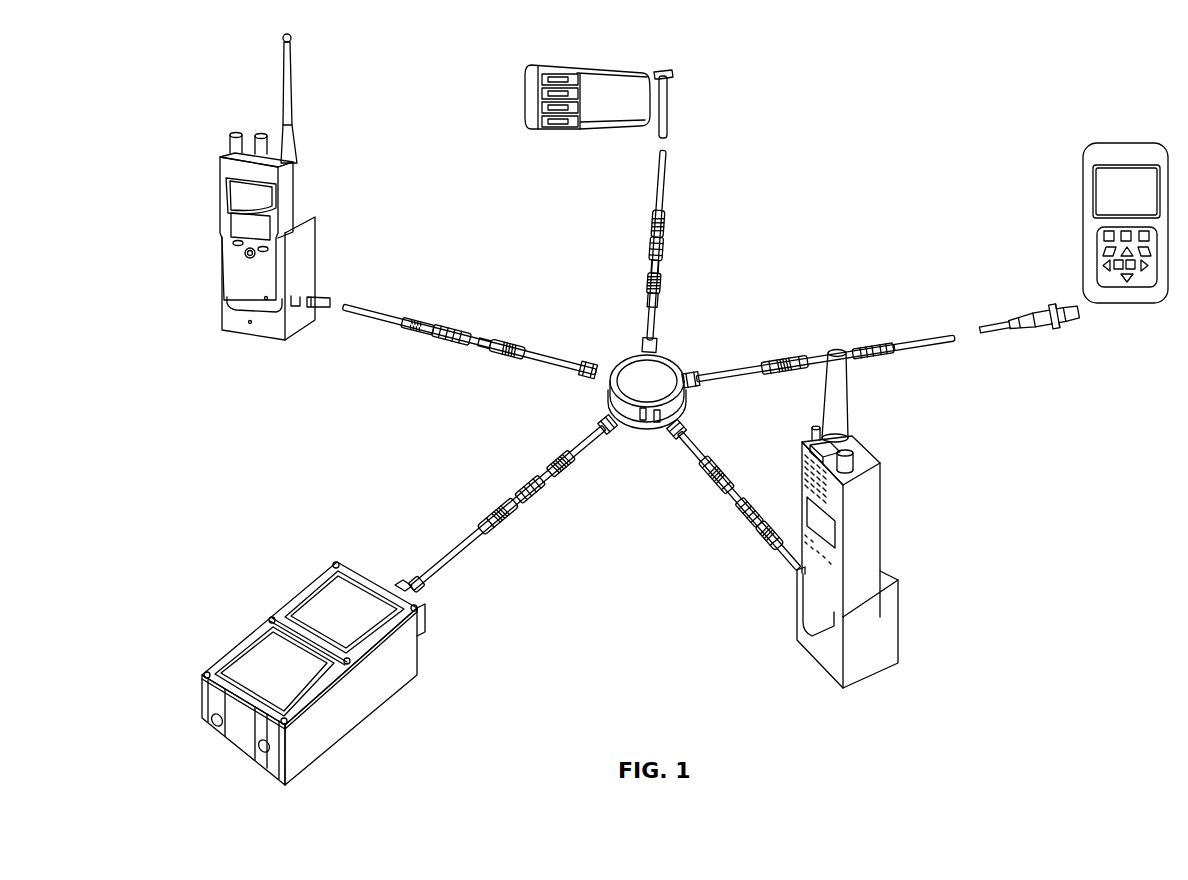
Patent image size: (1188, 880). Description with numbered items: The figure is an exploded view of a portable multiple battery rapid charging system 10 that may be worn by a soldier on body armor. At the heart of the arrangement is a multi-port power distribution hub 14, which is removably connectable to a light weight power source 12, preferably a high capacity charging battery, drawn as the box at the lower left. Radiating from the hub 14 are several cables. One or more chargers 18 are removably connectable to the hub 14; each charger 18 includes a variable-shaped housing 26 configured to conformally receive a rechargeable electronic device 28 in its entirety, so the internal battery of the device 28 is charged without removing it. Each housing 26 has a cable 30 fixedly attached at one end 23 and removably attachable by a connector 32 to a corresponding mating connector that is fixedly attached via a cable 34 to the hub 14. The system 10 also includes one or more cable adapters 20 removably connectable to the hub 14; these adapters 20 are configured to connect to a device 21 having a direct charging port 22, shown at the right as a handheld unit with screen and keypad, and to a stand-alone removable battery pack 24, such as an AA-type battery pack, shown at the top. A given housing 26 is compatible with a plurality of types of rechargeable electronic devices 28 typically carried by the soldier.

The portable multiple battery rapid charging system 10 is at (222, 67).
The light weight power source 12 is at (374, 577).
The multi-port power distribution hub 14 is at (663, 353).
The charger 18 is at (558, 363).
The cable adapter 20 is at (670, 118).
The device 21 is at (1101, 246).
The direct charging port 22 is at (1087, 262).
The end 23 is at (457, 328).
The removable battery pack 24 is at (615, 76).
The variable-shaped housing 26 is at (318, 248).
The rechargeable electronic device 28 is at (232, 153).
The cable 30 is at (364, 311).
The connector 32 is at (420, 338).
The cable 34 is at (510, 341).